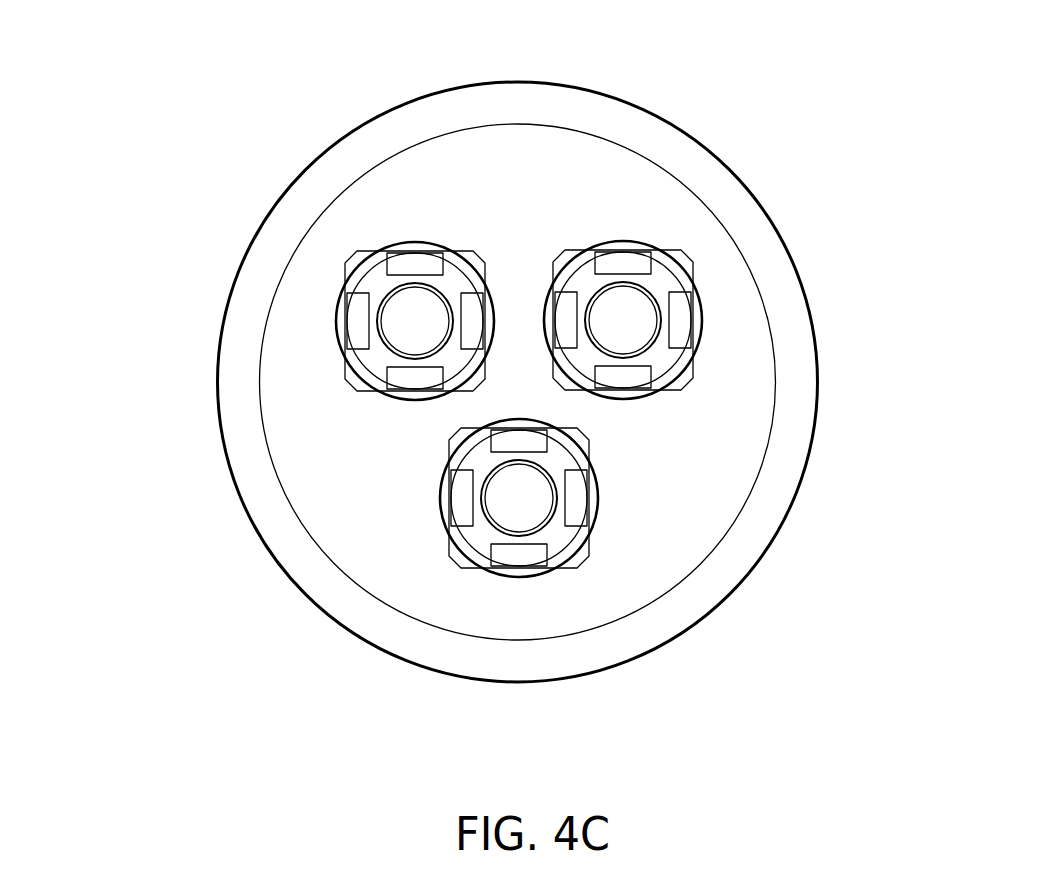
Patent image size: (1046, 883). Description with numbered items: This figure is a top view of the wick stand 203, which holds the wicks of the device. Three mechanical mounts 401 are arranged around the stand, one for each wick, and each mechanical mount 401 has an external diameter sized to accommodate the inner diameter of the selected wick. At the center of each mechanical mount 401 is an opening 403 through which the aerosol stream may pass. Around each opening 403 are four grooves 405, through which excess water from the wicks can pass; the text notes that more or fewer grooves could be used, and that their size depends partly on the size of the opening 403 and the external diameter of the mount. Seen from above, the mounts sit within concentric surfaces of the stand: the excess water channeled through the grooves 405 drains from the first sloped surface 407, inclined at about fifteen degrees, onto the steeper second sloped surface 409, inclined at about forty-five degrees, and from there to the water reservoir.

The wick stand 203 is at (207, 82).
The mechanical mount 401 is at (380, 400).
The opening 403 is at (410, 318).
The groove 405 is at (636, 716).
The first sloped surface 407 is at (762, 375).
The second sloped surface 409 is at (762, 247).